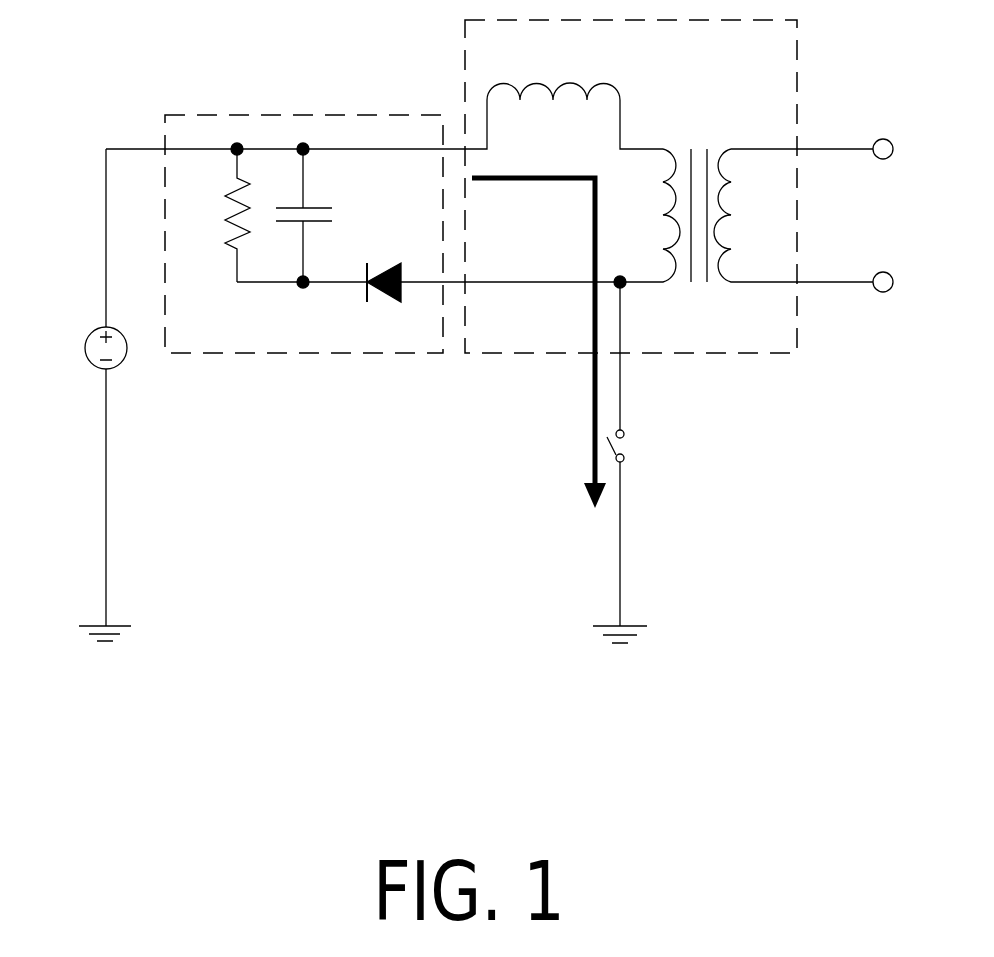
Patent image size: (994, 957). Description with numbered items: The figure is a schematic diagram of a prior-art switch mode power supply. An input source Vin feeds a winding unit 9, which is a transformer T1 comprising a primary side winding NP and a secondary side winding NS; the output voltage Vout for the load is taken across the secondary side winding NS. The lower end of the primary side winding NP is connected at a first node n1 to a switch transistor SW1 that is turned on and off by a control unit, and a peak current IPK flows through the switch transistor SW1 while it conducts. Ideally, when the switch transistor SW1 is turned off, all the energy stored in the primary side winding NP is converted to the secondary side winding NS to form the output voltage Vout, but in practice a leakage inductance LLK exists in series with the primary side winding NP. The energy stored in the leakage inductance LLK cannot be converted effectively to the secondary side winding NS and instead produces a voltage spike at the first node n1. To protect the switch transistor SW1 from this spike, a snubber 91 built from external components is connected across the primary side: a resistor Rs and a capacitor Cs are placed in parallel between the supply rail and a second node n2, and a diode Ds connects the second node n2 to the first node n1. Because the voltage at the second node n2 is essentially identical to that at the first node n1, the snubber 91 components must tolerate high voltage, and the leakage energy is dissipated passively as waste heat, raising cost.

The winding unit 9 is at (797, 57).
The snubber 91 is at (233, 115).
The transformer T1 is at (669, 190).
The switch transistor SW1 is at (646, 462).
The first node n1 is at (588, 300).
The second node n2 is at (303, 300).
The resistor Rs is at (216, 215).
The capacitor Cs is at (323, 215).
The diode Ds is at (386, 301).
The leakage inductance LLK is at (564, 99).
The primary side winding NP is at (572, 215).
The secondary side winding NS is at (793, 215).
The input voltage source Vin is at (101, 395).
The output voltage Vout is at (886, 215).
The peak current IPK is at (539, 343).